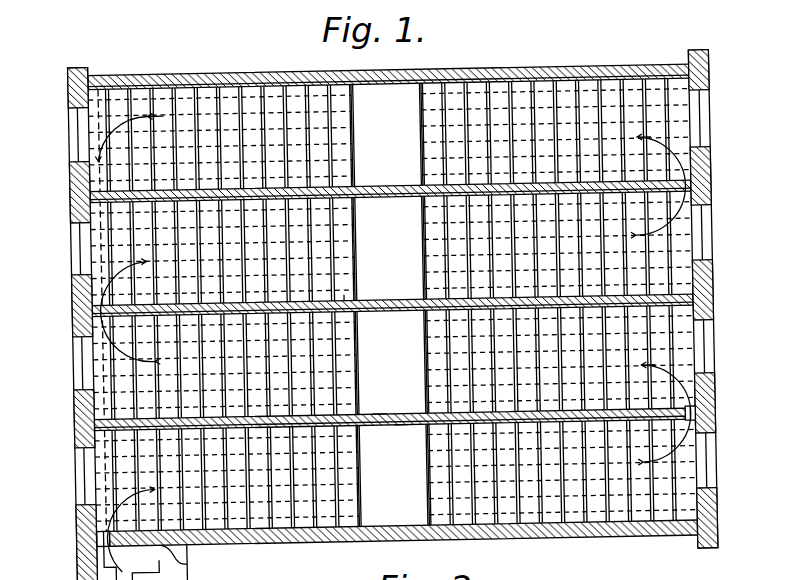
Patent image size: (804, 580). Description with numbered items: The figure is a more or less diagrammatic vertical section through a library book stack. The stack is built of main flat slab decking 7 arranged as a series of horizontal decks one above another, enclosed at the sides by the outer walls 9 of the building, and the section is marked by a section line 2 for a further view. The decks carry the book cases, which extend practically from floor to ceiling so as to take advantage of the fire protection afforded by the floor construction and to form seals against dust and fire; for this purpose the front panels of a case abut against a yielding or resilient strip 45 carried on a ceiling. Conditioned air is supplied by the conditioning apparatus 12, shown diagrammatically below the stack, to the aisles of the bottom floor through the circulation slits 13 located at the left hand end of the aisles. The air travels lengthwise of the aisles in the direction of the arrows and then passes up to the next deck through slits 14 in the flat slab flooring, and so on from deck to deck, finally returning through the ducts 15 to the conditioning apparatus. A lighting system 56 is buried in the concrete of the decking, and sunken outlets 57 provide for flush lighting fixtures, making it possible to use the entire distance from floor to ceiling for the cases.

The section line 2- 2 is at (67, 262).
The main flat slab decking 7 is at (378, 192).
The outer walls 9 is at (710, 188).
The conditioning apparatus 12 is at (174, 577).
The circulation slits 13 is at (94, 543).
The slits 14 is at (690, 422).
The ducts 15 is at (95, 134).
The yielding or resilient strip 45 is at (338, 306).
The lighting system 56 is at (373, 420).
The sunken outlets 57 is at (396, 431).